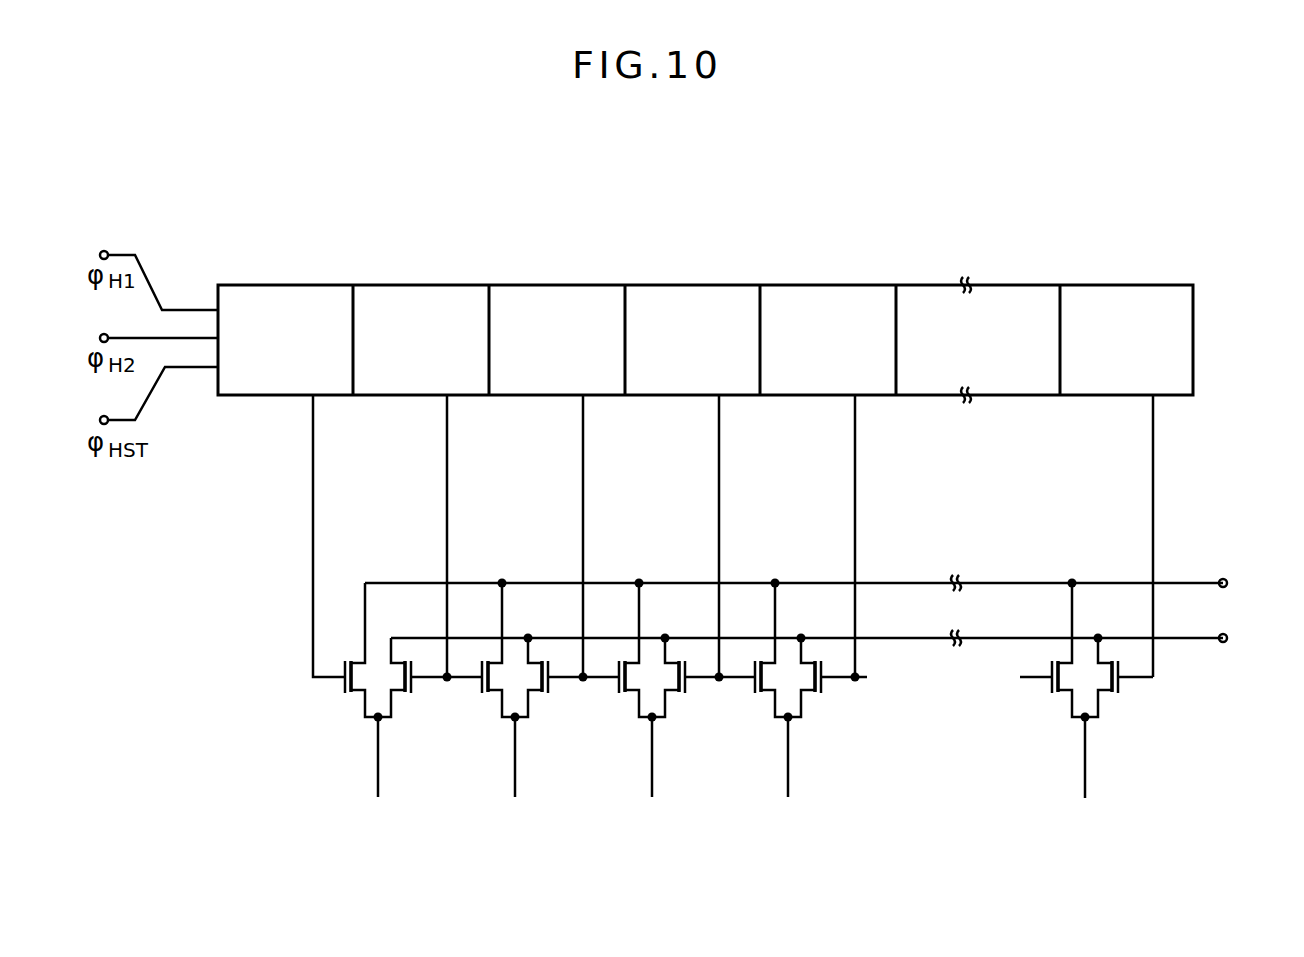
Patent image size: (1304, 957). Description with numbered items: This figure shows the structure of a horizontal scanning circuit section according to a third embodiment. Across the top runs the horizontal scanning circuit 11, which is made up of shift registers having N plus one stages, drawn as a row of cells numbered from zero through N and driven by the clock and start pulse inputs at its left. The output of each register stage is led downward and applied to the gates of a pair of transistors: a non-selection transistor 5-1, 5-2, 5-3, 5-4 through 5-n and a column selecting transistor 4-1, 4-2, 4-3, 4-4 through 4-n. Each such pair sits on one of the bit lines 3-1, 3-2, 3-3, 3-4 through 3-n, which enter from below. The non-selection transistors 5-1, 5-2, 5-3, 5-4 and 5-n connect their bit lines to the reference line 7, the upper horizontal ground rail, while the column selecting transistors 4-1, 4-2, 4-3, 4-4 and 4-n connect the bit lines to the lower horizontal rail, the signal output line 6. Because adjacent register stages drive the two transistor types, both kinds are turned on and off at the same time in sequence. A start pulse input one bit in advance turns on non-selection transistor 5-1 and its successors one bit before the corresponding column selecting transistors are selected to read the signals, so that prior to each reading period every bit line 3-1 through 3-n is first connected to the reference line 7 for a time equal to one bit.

The horizontal scanning circuit 11 is at (1035, 287).
The reference line 7 is at (1185, 582).
The signal output line (SIG) 6 is at (1167, 642).
The non-selection transistor 5-1 is at (350, 695).
The non-selection transistor 5-2 is at (487, 695).
The non-selection transistor 5-3 is at (624, 695).
The non-selection transistor 5-4 is at (760, 695).
The non-selection transistor 5-n is at (1047, 697).
The column selecting transistor 4-1 is at (398, 697).
The column selecting transistor 4-2 is at (535, 697).
The column selecting transistor 4-3 is at (672, 697).
The column selecting transistor 4-4 is at (808, 697).
The column selecting transistor 4-n is at (1113, 700).
The bit line 3-1 is at (376, 779).
The bit line 3-2 is at (513, 779).
The bit line 3-3 is at (650, 779).
The bit line 3-4 is at (786, 779).
The bit line 3-n is at (1081, 780).